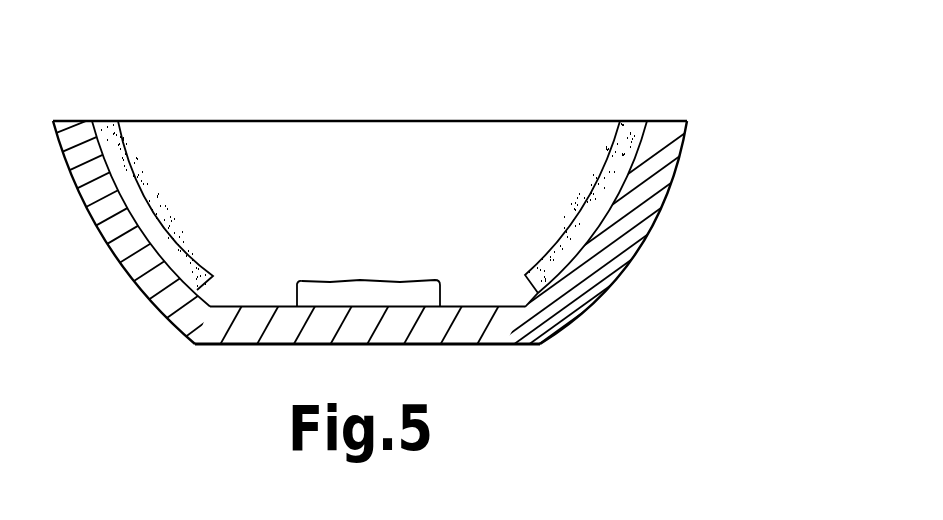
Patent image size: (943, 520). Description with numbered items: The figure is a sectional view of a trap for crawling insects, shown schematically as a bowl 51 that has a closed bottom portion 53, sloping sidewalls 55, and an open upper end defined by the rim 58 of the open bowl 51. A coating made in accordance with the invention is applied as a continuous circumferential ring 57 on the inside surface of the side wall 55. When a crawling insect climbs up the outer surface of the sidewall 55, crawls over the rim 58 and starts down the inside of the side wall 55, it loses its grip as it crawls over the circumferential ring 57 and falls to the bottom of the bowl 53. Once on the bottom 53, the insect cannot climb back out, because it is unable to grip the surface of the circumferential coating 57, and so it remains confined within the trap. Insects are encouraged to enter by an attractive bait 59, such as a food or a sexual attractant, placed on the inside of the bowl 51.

The bowl 51 is at (683, 227).
The closed bottom portion 53 is at (452, 345).
The sloping sidewalls 55 is at (137, 278).
The continuous circumferential ring 57 is at (142, 176).
The rim 58 is at (370, 121).
The attractive bait 59 is at (340, 280).